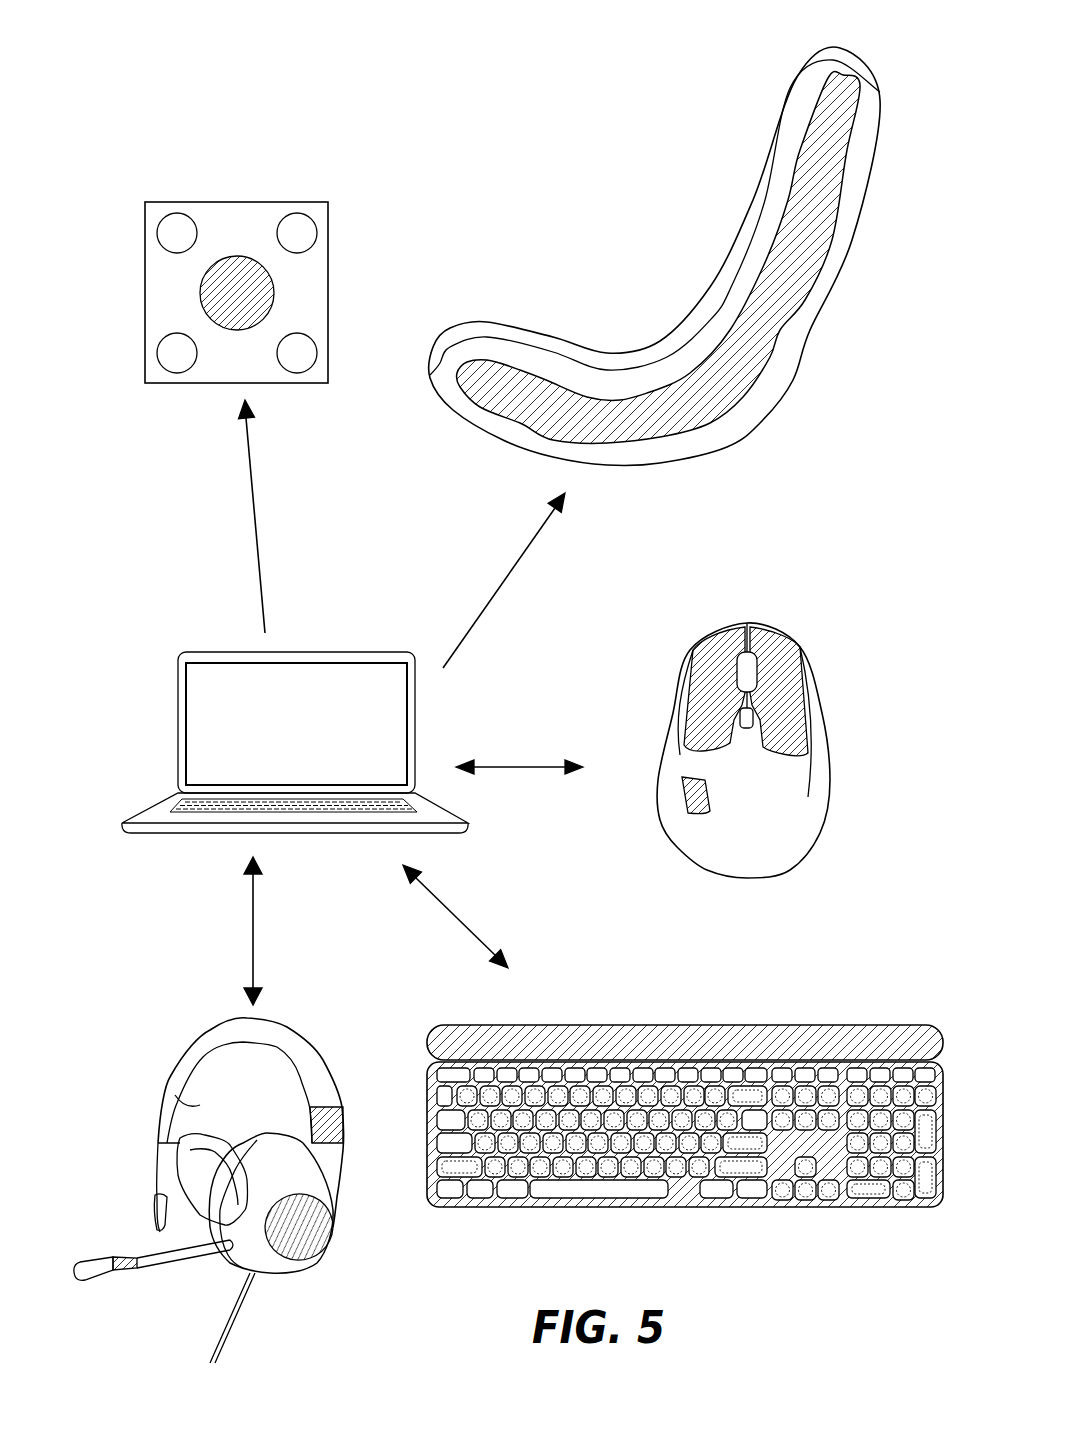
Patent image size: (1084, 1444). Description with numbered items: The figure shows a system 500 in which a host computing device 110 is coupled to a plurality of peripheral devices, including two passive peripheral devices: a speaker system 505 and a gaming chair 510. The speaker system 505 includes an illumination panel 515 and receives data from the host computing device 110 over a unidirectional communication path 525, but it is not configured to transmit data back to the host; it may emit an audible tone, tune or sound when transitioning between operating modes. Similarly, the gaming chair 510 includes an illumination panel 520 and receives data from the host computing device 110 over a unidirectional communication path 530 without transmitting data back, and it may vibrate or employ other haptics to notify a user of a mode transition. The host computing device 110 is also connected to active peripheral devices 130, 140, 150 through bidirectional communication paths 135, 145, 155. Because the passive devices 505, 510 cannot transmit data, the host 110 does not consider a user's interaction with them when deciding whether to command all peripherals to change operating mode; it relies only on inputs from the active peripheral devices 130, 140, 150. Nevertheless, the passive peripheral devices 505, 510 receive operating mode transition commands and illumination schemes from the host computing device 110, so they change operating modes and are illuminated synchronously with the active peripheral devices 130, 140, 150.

The system 500 is at (290, 58).
The speaker system 505 is at (145, 285).
The illumination panel 515 is at (237, 260).
The gaming chair 510 is at (748, 195).
The illumination panel 520 is at (748, 335).
The unidirectional communication path 525 is at (250, 512).
The unidirectional communication path 530 is at (532, 535).
The host computing device 110 is at (363, 652).
The active peripheral device 130 is at (772, 630).
The bidirectional communication path 135 is at (508, 767).
The active peripheral device 140 is at (722, 1025).
The bidirectional communication path 145 is at (458, 917).
The active peripheral device 150 is at (323, 1240).
The bidirectional communication path 155 is at (253, 935).